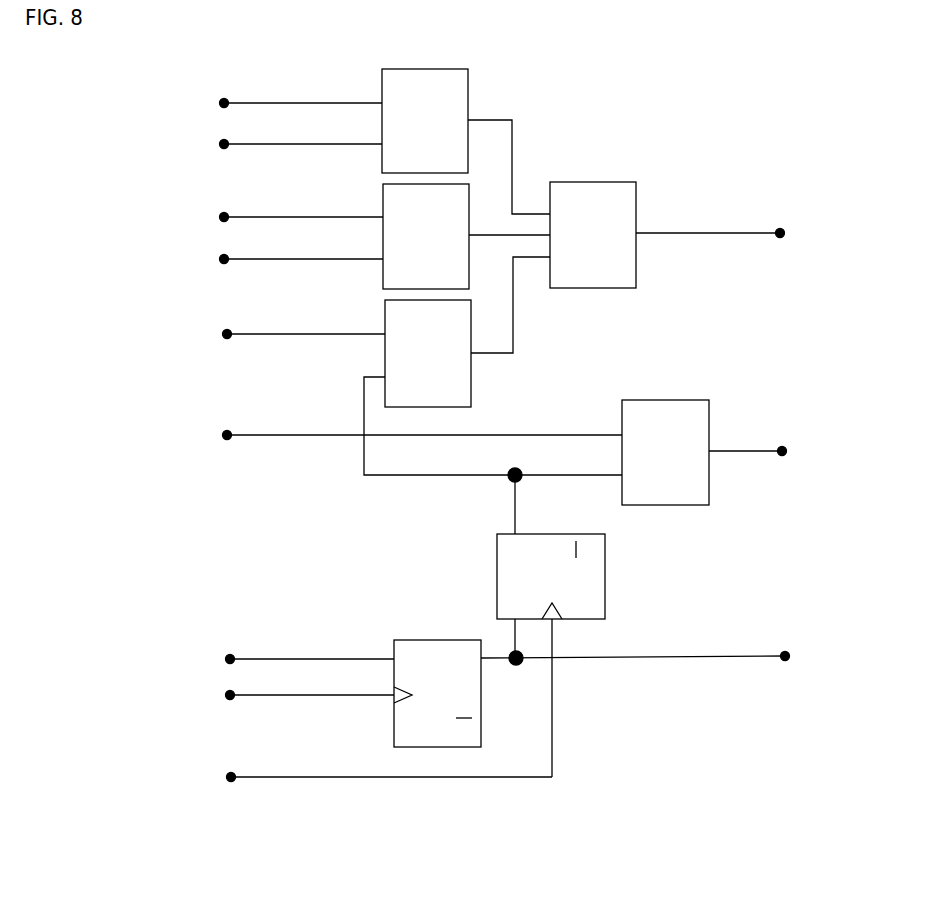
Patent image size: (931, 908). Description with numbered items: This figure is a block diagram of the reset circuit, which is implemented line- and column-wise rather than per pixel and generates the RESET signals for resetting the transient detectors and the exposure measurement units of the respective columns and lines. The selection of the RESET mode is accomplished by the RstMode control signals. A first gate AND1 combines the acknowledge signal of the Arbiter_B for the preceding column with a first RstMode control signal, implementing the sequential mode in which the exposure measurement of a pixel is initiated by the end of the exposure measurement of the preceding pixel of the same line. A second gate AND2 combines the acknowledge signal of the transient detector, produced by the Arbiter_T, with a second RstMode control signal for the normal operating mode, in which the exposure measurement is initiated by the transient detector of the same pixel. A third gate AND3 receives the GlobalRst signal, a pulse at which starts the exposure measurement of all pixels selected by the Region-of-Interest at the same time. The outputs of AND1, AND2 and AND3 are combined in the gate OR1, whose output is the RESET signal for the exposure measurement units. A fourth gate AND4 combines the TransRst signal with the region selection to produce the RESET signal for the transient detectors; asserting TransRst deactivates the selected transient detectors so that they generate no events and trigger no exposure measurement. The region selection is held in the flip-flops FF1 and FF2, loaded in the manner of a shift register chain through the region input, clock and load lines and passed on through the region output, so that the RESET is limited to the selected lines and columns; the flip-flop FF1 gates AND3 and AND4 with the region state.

The AND gate (Ack_B, RstMode_1) AND1 is at (425, 121).
The AND gate (Ack_T, RstMode_2) AND2 is at (426, 236).
The AND gate (GlobalRst, ROI flag) AND3 is at (428, 353).
The OR gate ( =1) producing Rst_B OR1 is at (593, 235).
The AND gate (TransRst, ROI flag) producing Rst_T AND4 is at (665, 452).
The D flip-flop (ROI flag register, rotated) FF1 is at (551, 576).
The D flip-flop (ROI register) FF2 is at (437, 693).
The GlobalRst signal GlobalRst is at (304, 322).
The TransRst signal TransRst is at (423, 424).